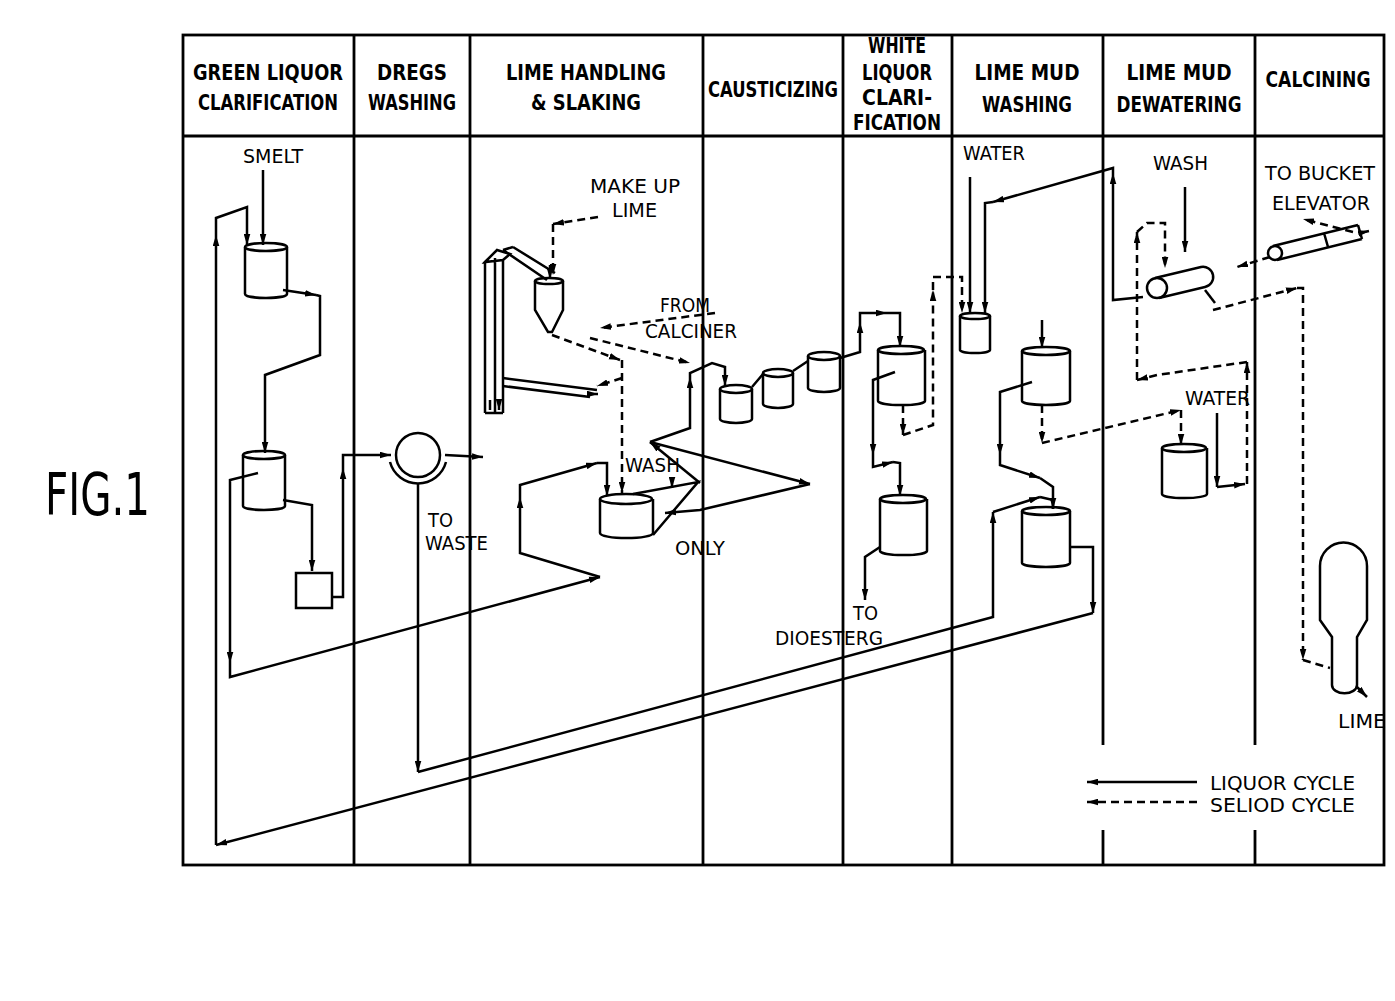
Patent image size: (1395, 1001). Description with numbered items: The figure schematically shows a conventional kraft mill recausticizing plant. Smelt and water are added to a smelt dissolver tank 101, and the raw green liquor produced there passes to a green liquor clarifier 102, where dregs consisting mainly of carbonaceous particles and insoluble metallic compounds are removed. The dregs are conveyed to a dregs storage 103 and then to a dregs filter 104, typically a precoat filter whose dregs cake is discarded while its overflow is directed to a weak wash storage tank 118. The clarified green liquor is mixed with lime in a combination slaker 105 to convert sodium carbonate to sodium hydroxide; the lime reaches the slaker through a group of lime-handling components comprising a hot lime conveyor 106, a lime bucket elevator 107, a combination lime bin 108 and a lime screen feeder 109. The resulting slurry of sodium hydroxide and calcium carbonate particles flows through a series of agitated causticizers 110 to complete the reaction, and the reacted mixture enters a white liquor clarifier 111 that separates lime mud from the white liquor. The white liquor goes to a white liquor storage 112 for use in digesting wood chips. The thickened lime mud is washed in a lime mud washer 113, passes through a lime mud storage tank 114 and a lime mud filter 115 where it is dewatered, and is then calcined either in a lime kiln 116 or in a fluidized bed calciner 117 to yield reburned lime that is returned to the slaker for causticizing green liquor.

The smelt dissolver tank 101 is at (264, 325).
The green liquor clarifier 102 is at (303, 437).
The dregs storage 103 is at (282, 620).
The dregs filter 104 is at (420, 415).
The combination slaker 105 is at (630, 543).
The hot lime conveyor 106 is at (590, 417).
The lime bucket elevator 107 is at (525, 372).
The combination lime bin 108 is at (612, 281).
The lime screen feeder 109 is at (545, 360).
The causticizers 110 is at (774, 416).
The white liquor clarifier 111 is at (897, 283).
The white liquor storage 112 is at (915, 562).
The lime mud washer 113 is at (1027, 319).
The lime mud storage tank 114 is at (1211, 529).
The lime mud filter 115 is at (1200, 313).
The lime kiln 116 is at (1318, 272).
The fluidized bed calciner 117 is at (1329, 589).
The weak wash storage tank 118 is at (1042, 577).